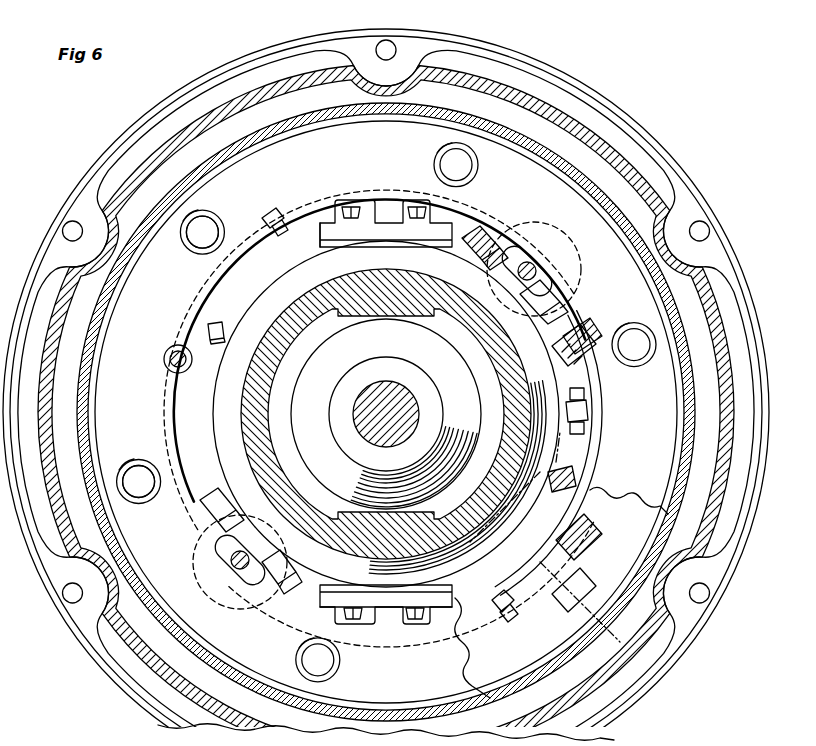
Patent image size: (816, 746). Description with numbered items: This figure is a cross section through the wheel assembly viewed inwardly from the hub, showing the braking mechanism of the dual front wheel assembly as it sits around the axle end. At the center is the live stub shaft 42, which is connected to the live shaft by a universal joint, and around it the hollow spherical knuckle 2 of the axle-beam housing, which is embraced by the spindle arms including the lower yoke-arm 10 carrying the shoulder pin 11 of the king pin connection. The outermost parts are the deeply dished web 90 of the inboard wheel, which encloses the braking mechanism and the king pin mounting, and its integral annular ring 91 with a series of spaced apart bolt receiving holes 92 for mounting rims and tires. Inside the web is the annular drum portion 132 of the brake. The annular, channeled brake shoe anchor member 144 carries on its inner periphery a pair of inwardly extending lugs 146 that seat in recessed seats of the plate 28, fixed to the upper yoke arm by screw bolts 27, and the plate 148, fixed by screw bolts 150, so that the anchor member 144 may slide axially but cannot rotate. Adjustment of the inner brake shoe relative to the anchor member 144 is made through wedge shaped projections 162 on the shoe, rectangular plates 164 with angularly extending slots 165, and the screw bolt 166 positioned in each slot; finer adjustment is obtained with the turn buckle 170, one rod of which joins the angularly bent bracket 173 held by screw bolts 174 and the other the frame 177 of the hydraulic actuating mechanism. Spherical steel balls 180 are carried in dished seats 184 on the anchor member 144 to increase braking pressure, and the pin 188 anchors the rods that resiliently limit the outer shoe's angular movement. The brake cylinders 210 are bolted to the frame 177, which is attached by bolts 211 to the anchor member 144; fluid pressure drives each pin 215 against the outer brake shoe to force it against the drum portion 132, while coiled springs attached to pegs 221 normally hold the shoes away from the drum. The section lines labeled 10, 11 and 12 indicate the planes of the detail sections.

The hollow spherical knuckle 2 is at (250, 402).
The live stub shaft 42 is at (354, 428).
The web of the inboard wheel 90 is at (136, 170).
The annular ring 91 is at (128, 133).
The bolt receiving holes 92 is at (66, 222).
The drum portion 132 is at (543, 142).
The brake shoe anchor member 144 is at (545, 178).
The lugs 146 is at (388, 212).
The plate 148 is at (366, 612).
The screw bolts 150 is at (442, 626).
The wedge shaped projections 162 is at (600, 590).
The rectangular plates 164 is at (214, 295).
The angularly extending slots 165 is at (604, 536).
The screw bolt 166 is at (210, 330).
The turn buckle 170 is at (560, 348).
The angularly bent bracket 173 is at (590, 411).
The screw bolts 174 is at (586, 394).
The frame 177 is at (500, 274).
The spherical steel balls 180 is at (198, 238).
The dished seats 184 is at (208, 210).
The pin 188 is at (164, 358).
The brake cylinders 210 is at (556, 238).
The bolts 211 is at (480, 250).
The pin 215 is at (538, 270).
The pegs 221 is at (275, 210).
The screw bolts 27 is at (344, 208).
The plate 28 is at (328, 236).
The lower yoke-arm 10 is at (550, 466).
The shoulder pin 11 is at (576, 462).
The section line 12 is at (640, 498).